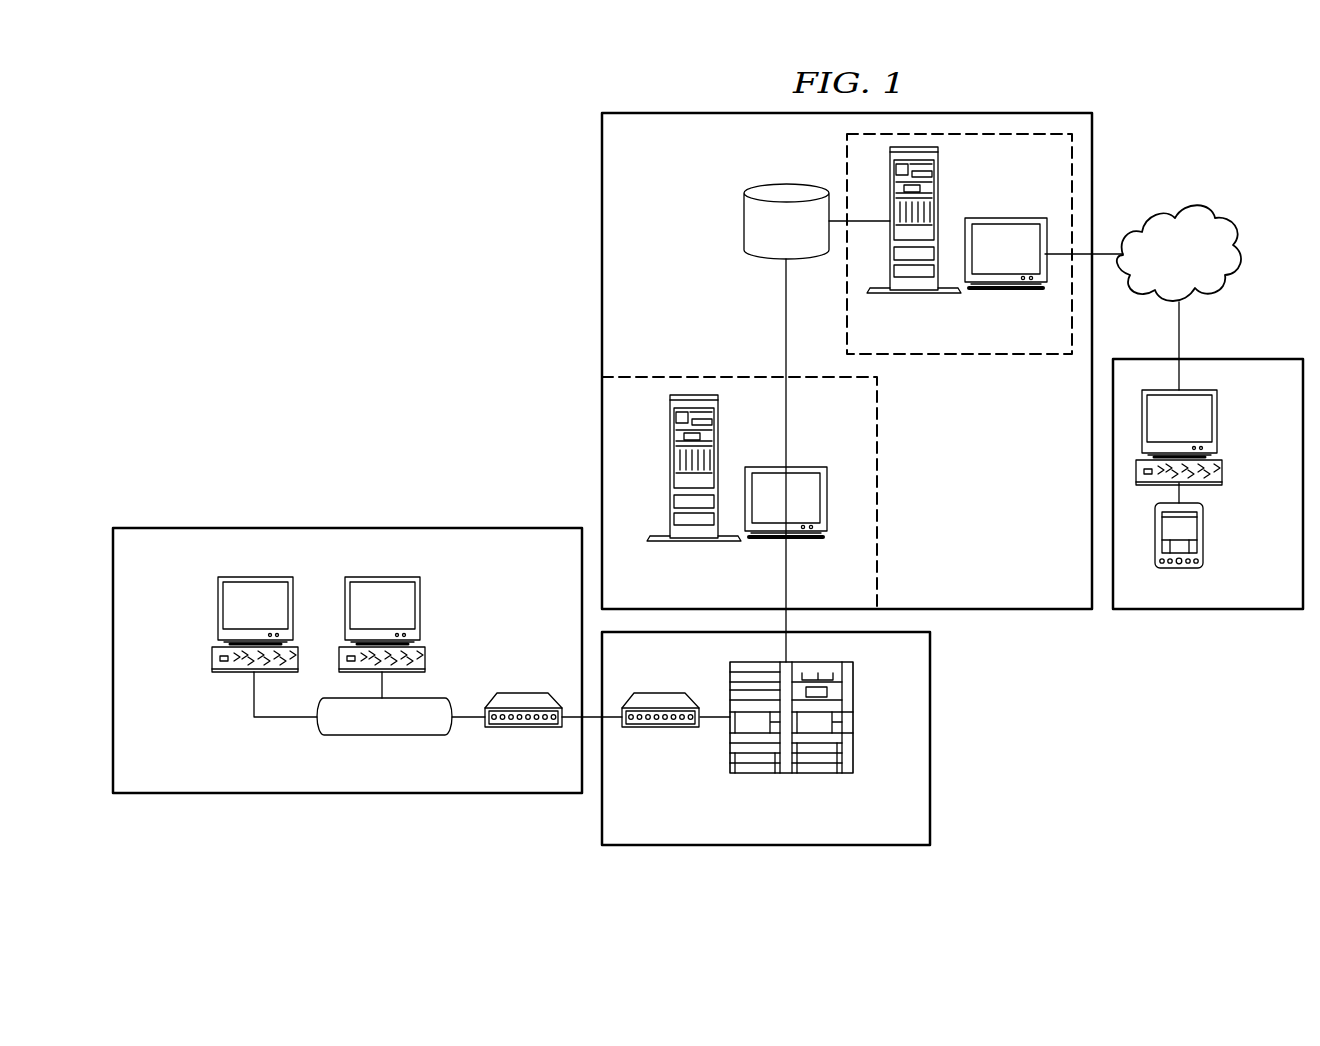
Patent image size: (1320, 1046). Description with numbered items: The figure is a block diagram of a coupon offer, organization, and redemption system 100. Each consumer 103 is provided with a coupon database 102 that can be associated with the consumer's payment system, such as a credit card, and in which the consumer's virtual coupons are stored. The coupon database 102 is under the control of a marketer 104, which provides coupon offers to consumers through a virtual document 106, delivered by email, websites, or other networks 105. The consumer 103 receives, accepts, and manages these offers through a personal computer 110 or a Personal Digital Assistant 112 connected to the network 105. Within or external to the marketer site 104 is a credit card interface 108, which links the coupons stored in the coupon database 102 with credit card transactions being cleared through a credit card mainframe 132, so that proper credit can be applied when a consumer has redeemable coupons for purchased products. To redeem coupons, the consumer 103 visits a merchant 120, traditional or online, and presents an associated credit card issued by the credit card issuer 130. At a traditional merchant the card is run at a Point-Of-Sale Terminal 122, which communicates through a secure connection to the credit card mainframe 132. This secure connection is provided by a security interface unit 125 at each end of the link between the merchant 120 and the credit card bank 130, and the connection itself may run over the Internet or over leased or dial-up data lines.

The coupon offer/organization/redemption system 100 is at (506, 191).
The coupon database 102 is at (744, 217).
The consumer 103 is at (1211, 615).
The marketer 104 is at (1002, 512).
The network 105 is at (1205, 203).
The virtual document 106 is at (968, 356).
The credit card interface 108 is at (700, 375).
The personal computer 110 is at (1217, 421).
The Personal Digital Assistant 112 is at (1203, 537).
The merchant 120 is at (343, 524).
The Point-Of-Sale Terminal 122 is at (217, 608).
The security interface unit 125 is at (523, 693).
The credit card issuer 130 is at (936, 738).
The credit card mainframe 132 is at (856, 705).